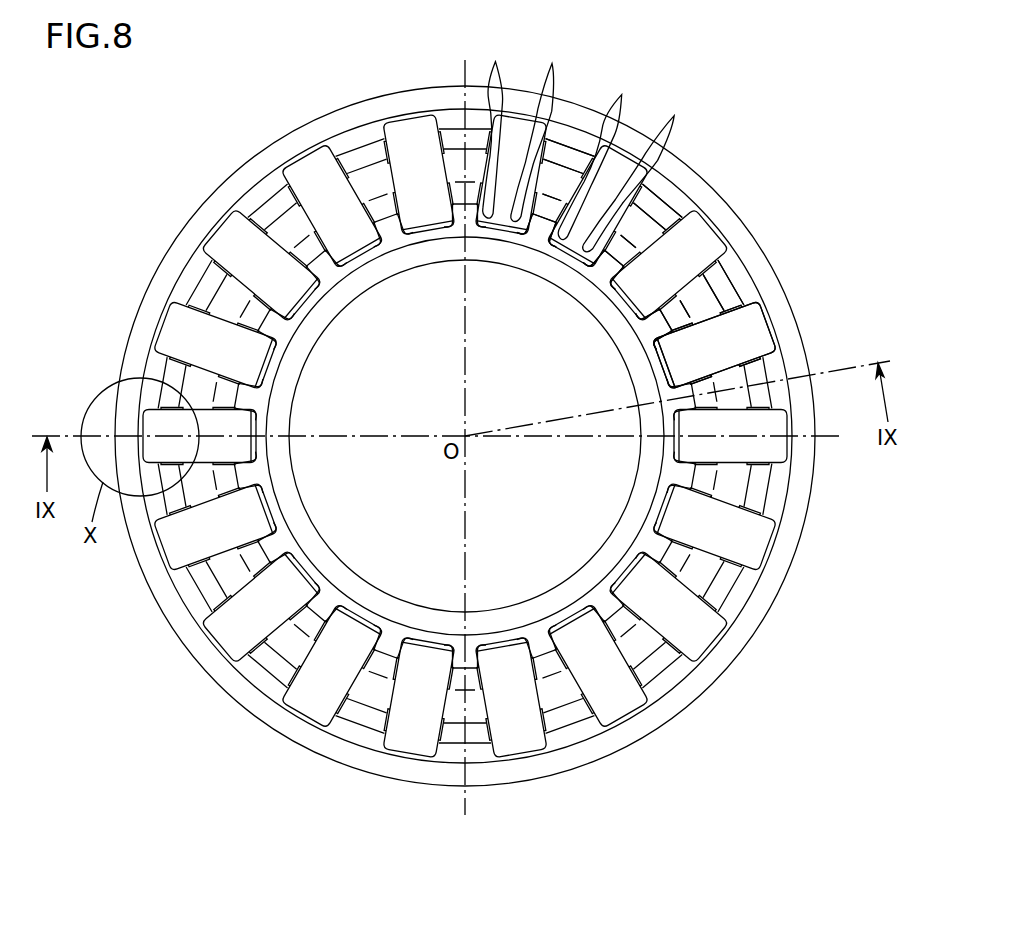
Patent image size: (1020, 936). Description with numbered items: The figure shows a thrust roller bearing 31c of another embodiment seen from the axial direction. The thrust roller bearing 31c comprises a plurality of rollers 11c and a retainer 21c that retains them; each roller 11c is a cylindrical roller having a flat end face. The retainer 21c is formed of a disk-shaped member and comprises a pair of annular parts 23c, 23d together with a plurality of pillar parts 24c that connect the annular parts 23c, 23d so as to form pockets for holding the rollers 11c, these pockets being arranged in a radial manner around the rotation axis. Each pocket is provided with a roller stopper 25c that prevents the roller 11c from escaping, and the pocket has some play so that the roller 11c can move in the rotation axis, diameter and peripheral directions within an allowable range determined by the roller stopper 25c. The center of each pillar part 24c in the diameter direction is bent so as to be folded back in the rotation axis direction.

The roller 11c is at (515, 138).
The retainer 21c is at (696, 193).
The annular part 23c is at (750, 323).
The annular part 23d is at (652, 374).
The pillar part 24c is at (555, 180).
The roller stopper 25c is at (578, 149).
The thrust roller bearing 31c is at (731, 143).